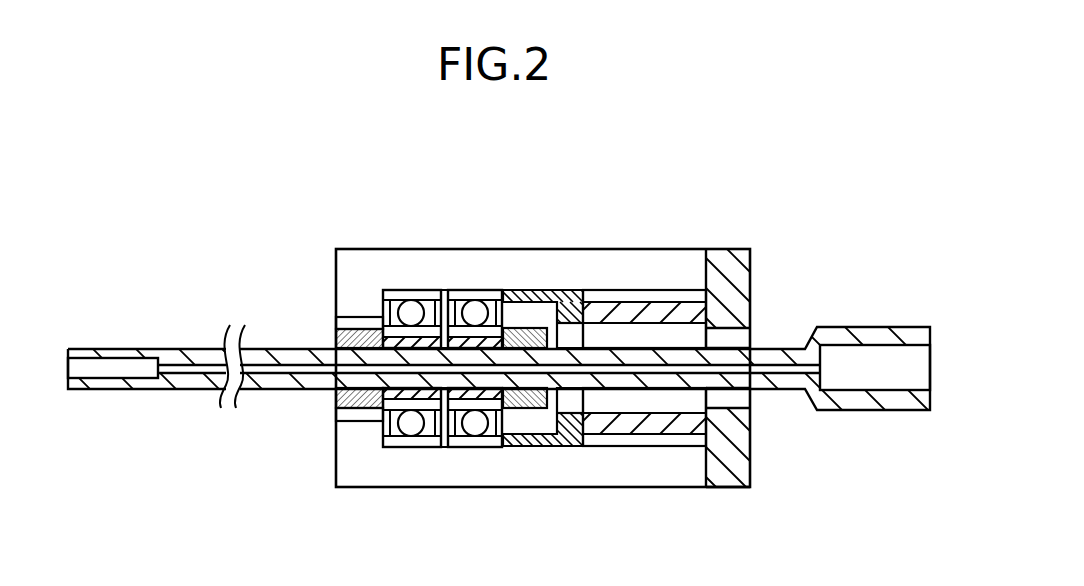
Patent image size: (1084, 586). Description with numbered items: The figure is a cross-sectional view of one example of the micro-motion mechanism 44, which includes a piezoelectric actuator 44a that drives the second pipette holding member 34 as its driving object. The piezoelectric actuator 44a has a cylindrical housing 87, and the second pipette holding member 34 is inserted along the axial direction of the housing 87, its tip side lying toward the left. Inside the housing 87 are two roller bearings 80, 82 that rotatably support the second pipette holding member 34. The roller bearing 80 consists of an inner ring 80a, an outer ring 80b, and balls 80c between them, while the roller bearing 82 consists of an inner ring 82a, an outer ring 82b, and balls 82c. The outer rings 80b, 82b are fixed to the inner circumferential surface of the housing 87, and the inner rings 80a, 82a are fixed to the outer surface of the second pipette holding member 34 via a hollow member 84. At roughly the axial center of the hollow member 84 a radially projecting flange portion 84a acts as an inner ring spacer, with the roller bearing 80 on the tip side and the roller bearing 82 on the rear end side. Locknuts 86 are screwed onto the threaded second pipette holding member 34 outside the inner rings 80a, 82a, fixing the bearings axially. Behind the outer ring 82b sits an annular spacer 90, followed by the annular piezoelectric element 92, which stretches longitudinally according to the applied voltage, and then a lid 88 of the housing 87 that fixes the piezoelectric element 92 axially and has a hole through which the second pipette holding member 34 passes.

The second pipette holding member 34 is at (132, 352).
The micro-motion mechanism 44 is at (812, 180).
The piezoelectric actuator 44a is at (722, 498).
The roller bearing 80 is at (353, 340).
The inner ring 80a is at (389, 401).
The outer ring 80b is at (397, 300).
The balls 80c is at (405, 311).
The roller bearing 82 is at (502, 364).
The inner ring 82a is at (494, 405).
The outer ring 82b is at (477, 311).
The balls 82c is at (501, 298).
The hollow member 84 is at (394, 447).
The flange portion 84a is at (444, 402).
The locknuts 86 is at (334, 396).
The housing 87 is at (618, 477).
The lid 88 is at (745, 262).
The spacer 90 is at (579, 292).
The piezoelectric element 92 is at (662, 305).